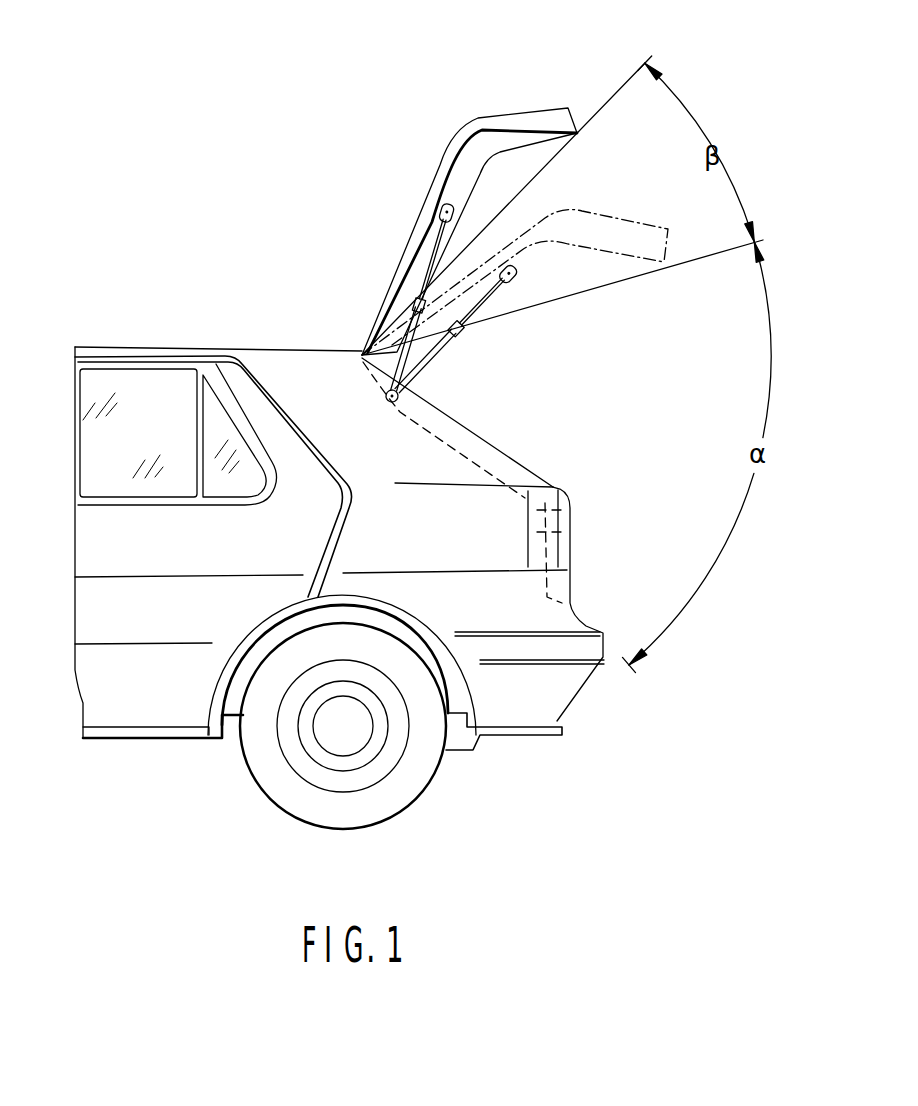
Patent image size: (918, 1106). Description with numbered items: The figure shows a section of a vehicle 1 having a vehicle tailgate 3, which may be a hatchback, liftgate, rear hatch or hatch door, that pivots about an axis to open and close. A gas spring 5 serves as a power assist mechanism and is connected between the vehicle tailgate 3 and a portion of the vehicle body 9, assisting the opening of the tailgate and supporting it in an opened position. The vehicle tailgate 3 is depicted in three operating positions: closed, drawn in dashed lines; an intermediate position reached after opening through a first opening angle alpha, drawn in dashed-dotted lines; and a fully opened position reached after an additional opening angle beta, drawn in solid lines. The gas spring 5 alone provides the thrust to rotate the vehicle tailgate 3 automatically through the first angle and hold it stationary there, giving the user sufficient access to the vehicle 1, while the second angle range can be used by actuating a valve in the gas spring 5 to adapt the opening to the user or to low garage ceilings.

The vehicle 1 is at (540, 744).
The vehicle tailgate 3 is at (507, 114).
The gas spring 5 is at (463, 347).
The vehicle body 9 is at (521, 457).